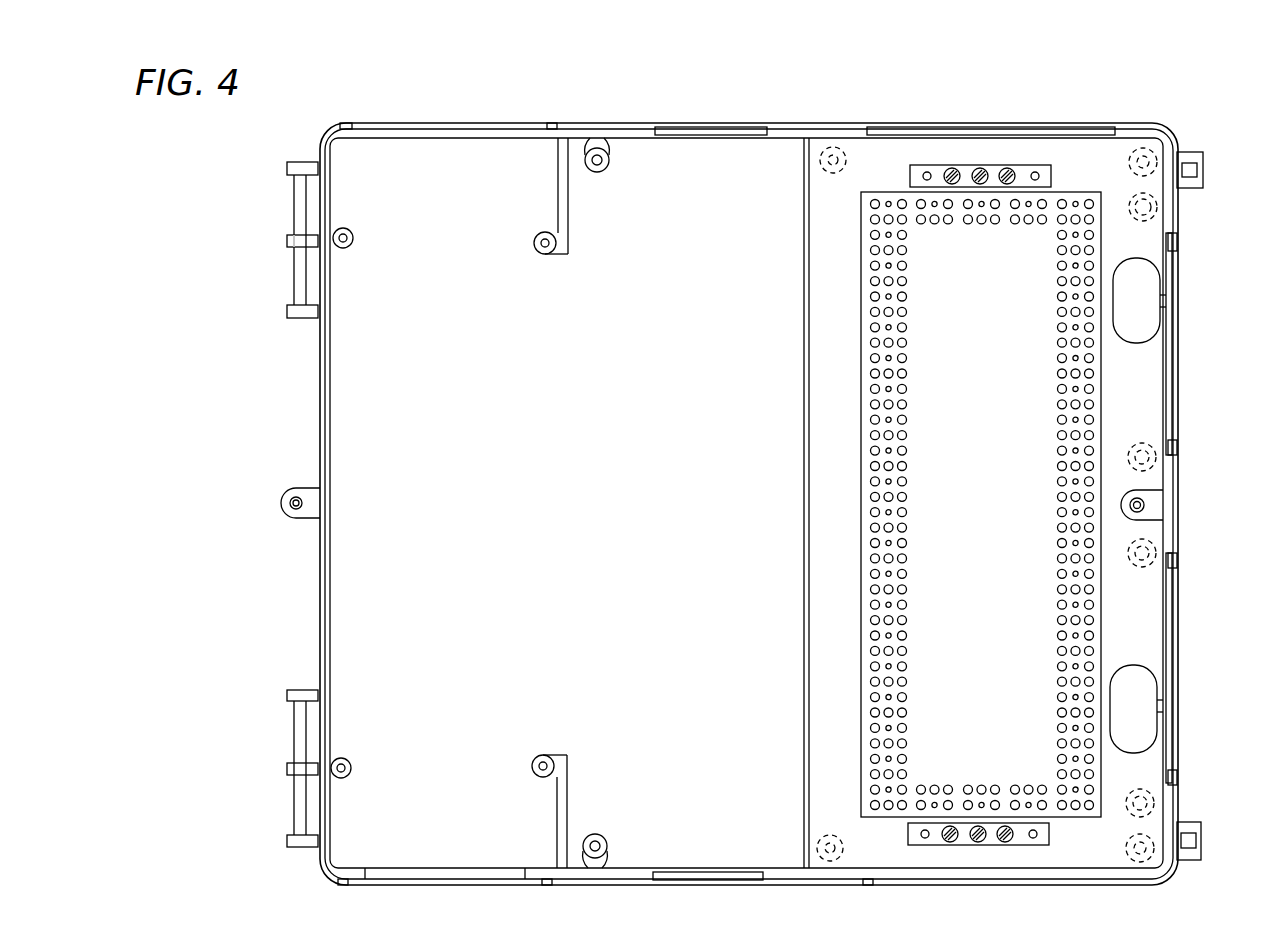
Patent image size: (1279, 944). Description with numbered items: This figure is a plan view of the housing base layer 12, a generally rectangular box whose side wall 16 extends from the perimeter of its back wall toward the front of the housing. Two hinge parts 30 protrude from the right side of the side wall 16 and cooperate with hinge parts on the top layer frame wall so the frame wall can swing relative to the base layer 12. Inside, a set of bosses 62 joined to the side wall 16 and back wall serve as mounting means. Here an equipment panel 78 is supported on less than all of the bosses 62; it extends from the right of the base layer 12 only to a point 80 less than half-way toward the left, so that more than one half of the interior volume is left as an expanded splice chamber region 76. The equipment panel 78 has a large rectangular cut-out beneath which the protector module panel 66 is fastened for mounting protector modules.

The base layer 12 is at (808, 122).
The side wall 16 is at (318, 397).
The hinge parts 30 is at (1204, 165).
The bosses 62 is at (624, 140).
The protector module panel 66 is at (1000, 240).
The expanded splice chamber region 76 is at (527, 138).
The equipment panel 78 is at (1075, 150).
The point 80 is at (768, 862).